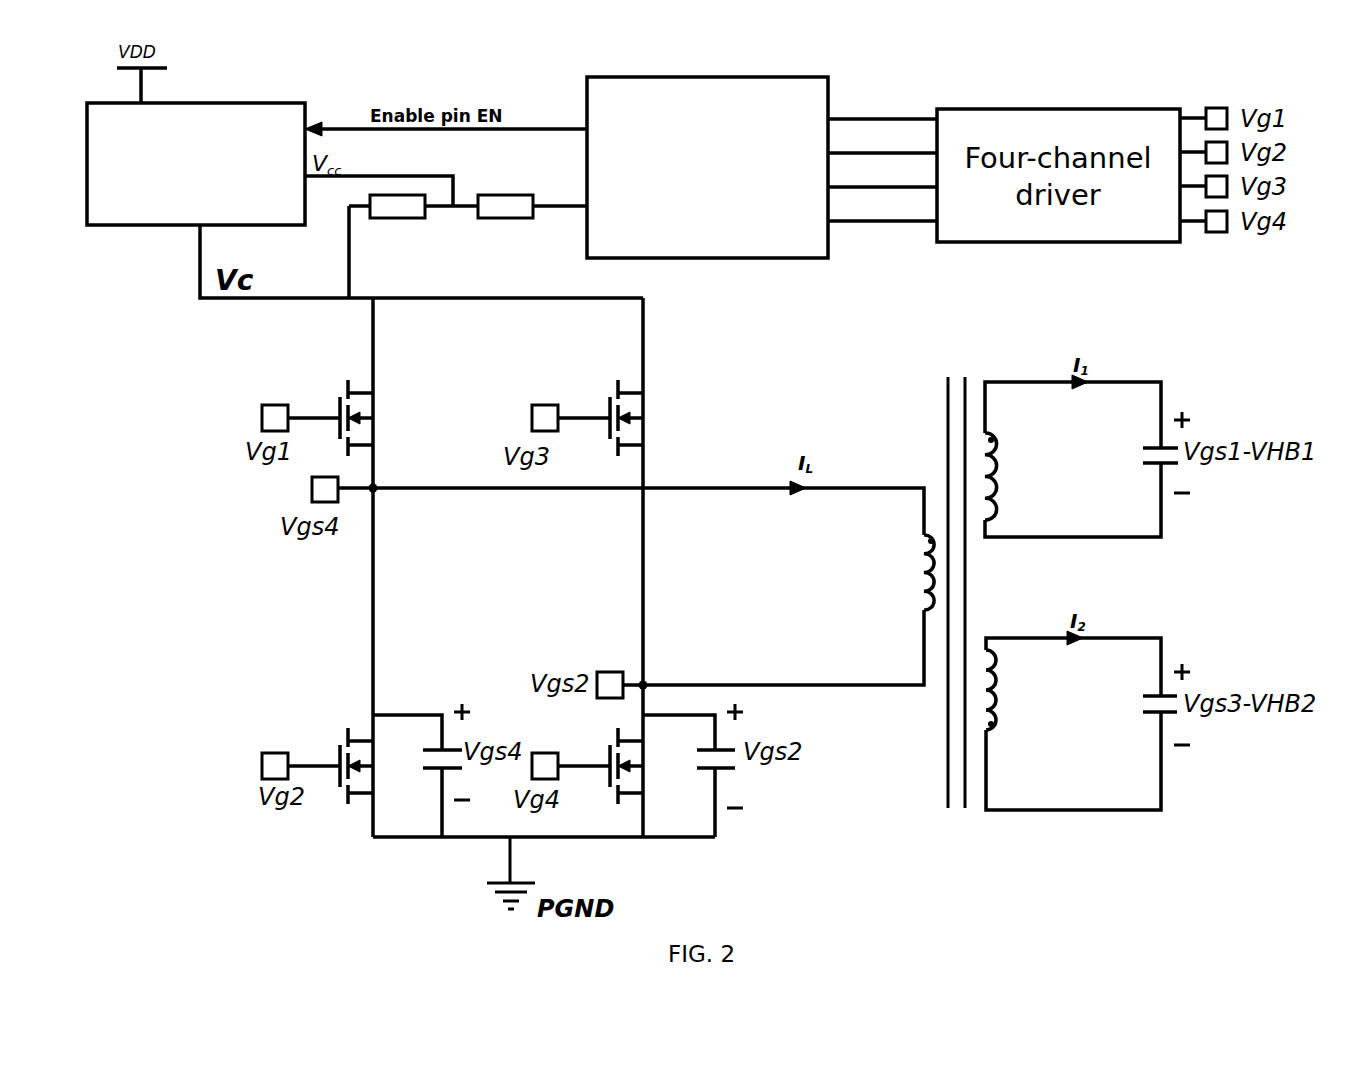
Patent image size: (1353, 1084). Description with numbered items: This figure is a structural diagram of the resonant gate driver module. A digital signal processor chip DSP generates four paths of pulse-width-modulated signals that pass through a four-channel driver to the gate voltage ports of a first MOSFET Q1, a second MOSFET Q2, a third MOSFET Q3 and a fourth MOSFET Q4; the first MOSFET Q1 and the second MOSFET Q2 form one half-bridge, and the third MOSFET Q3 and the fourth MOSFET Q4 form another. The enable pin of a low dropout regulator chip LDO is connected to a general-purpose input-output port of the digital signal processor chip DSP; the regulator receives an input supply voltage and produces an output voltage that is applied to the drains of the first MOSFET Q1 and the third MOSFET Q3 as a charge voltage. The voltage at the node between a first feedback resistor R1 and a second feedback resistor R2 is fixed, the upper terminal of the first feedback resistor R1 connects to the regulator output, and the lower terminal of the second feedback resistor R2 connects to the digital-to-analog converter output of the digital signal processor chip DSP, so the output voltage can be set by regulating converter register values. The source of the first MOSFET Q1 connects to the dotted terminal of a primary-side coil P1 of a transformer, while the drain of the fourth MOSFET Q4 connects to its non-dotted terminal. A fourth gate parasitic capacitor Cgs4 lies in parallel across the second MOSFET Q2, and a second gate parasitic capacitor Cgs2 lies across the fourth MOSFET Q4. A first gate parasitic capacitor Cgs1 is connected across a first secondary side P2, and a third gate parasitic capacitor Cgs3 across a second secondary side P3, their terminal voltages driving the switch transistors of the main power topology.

The low dropout regulator chip LDO is at (196, 164).
The digital signal processor chip DSP is at (707, 167).
The first feedback resistor R1 is at (397, 216).
The second feedback resistor R2 is at (505, 216).
The first MOSFET Q1 is at (317, 401).
The second MOSFET Q2 is at (317, 758).
The third MOSFET Q3 is at (587, 401).
The fourth MOSFET Q4 is at (587, 758).
The primary-side coil P1 is at (909, 572).
The first secondary side P2 is at (1011, 476).
The second secondary side P3 is at (1012, 690).
The first gate parasitic capacitor Cgs1 is at (1128, 452).
The second gate parasitic capacitor Cgs2 is at (689, 776).
The third gate parasitic capacitor Cgs3 is at (1131, 704).
The fourth gate parasitic capacitor Cgs4 is at (417, 776).